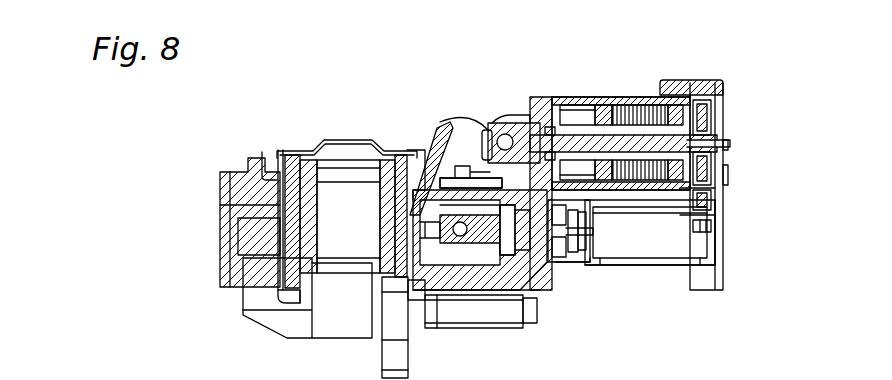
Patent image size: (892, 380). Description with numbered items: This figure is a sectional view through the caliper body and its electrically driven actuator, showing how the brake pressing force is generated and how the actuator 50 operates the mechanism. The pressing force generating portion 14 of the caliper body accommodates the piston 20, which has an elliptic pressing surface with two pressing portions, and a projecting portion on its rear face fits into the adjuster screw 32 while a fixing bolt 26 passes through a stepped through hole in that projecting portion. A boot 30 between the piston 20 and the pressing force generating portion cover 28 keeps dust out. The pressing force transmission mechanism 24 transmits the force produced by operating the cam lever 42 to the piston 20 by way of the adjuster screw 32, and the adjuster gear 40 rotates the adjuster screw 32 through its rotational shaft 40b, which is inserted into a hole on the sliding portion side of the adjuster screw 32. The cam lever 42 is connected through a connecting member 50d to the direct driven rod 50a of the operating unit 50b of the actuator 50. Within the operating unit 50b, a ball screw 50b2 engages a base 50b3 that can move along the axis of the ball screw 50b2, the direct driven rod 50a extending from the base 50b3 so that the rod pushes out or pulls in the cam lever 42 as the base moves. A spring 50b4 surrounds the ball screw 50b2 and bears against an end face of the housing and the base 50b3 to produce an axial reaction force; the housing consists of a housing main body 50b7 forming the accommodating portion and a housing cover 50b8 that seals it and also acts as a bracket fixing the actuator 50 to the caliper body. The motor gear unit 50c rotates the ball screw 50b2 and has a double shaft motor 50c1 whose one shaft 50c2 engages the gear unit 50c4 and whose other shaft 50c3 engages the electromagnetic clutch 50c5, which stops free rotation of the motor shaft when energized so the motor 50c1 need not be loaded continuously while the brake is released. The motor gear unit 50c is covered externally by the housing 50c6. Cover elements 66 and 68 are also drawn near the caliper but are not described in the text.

The pressing force generating portion 14 is at (497, 300).
The piston 20 is at (425, 205).
The pressing force transmission mechanism 24 is at (468, 295).
The fixing bolt 26 is at (440, 280).
The pressing force generating portion cover 28 is at (443, 120).
The boot 30 is at (382, 258).
The adjuster screw 32 is at (525, 282).
The adjuster gear 40 is at (545, 272).
The rotational shaft 40b is at (468, 200).
The cam lever 42 is at (485, 132).
The actuator 50 is at (666, 74).
The direct driven rod 50a is at (535, 110).
The operating unit 50b is at (622, 95).
The ball screw 50b2 is at (565, 120).
The base 50b3 is at (603, 105).
The spring 50b4 is at (635, 105).
The housing main body 50b7 is at (690, 90).
The housing cover 50b8 is at (547, 127).
The motor gear unit 50c is at (723, 120).
The motor 50c1 is at (672, 240).
The one shaft 50c2 is at (723, 232).
The other shaft 50c3 is at (588, 250).
The gear unit 50c4 is at (723, 208).
The electromagnetic clutch 50c5 is at (580, 262).
The housing 50c6 is at (723, 265).
The connecting member 50d is at (478, 130).
The cap 66 is at (393, 150).
The seal 68 is at (300, 150).